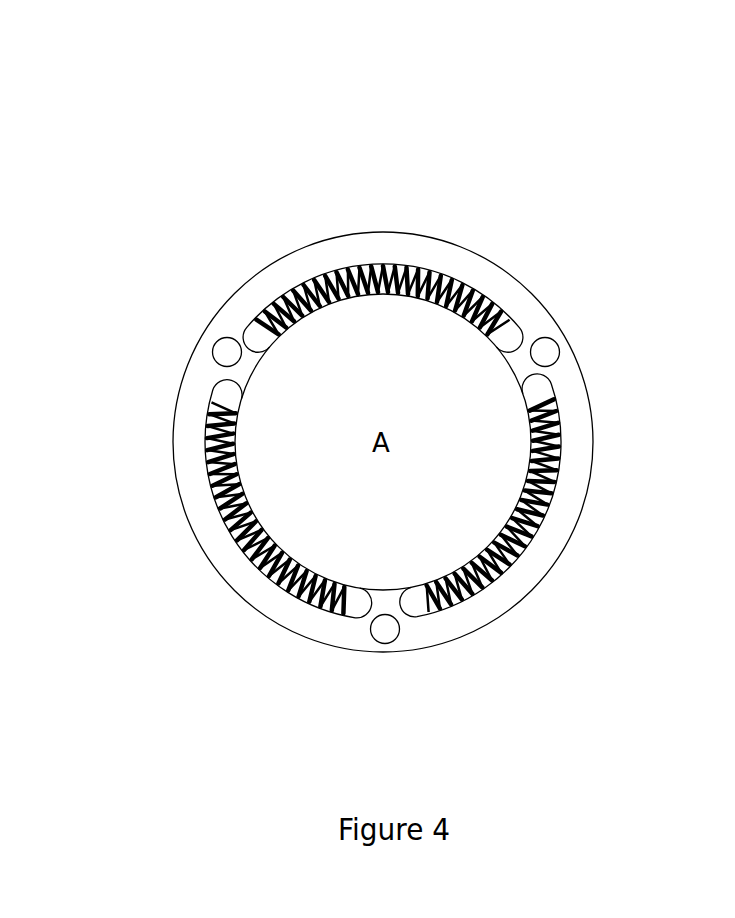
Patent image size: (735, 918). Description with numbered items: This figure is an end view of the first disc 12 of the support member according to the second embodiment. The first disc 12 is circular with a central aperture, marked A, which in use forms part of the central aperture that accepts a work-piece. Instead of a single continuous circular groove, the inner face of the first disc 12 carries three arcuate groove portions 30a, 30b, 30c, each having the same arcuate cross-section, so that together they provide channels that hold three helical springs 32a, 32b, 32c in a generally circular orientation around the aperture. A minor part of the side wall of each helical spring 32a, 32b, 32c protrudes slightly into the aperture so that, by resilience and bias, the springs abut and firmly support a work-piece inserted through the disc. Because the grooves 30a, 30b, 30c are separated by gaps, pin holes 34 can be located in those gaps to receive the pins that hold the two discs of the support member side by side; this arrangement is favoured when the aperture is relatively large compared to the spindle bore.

The first disc 12 is at (379, 146).
The arcuate groove portion 30a is at (520, 333).
The arcuate groove portion 30b is at (553, 383).
The arcuate groove portion 30c is at (225, 392).
The helical spring 32a is at (330, 285).
The helical spring 32b is at (533, 550).
The helical spring 32c is at (233, 548).
The pin holes 34 is at (222, 345).